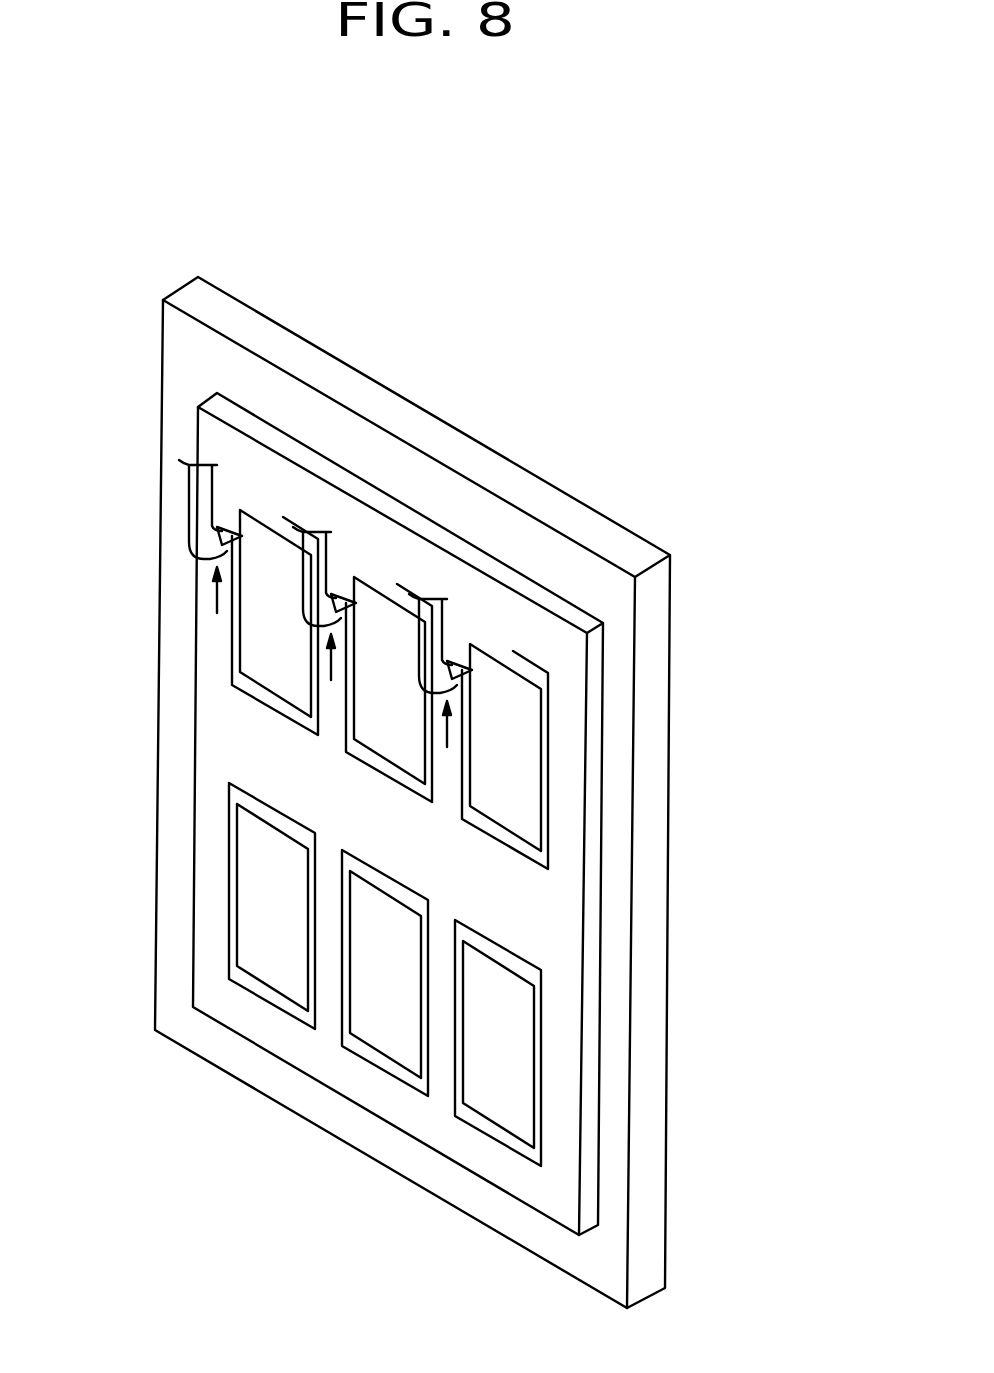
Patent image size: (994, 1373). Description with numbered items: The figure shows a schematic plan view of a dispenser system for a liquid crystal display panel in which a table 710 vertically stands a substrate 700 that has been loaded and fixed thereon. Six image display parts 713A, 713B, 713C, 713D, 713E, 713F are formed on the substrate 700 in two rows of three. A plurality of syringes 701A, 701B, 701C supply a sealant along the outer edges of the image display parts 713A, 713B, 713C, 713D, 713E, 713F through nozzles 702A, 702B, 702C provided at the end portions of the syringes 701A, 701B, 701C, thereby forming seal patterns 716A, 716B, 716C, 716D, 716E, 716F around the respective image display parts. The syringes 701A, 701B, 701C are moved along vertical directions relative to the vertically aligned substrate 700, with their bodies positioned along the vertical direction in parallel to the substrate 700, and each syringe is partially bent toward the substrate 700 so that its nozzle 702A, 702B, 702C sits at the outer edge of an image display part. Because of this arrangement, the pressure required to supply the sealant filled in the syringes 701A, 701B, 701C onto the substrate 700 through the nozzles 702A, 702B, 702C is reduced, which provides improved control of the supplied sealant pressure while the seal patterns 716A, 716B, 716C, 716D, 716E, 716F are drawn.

The substrate 700 is at (560, 1221).
The table 710 is at (665, 1223).
The syringe 701A is at (264, 409).
The syringe 701B is at (375, 475).
The syringe 701C is at (493, 543).
The nozzle 702A is at (313, 449).
The nozzle 702B is at (424, 513).
The nozzle 702C is at (540, 584).
The image display part 713A is at (533, 1039).
The image display part 713B is at (417, 972).
The image display part 713C is at (300, 908).
The image display part 713D is at (533, 763).
The image display part 713E is at (418, 659).
The image display part 713F is at (300, 588).
The seal pattern 716A is at (497, 1139).
The seal pattern 716B is at (383, 1072).
The seal pattern 716C is at (270, 1002).
The seal pattern 716D is at (548, 845).
The seal pattern 716E is at (418, 798).
The seal pattern 716F is at (252, 700).